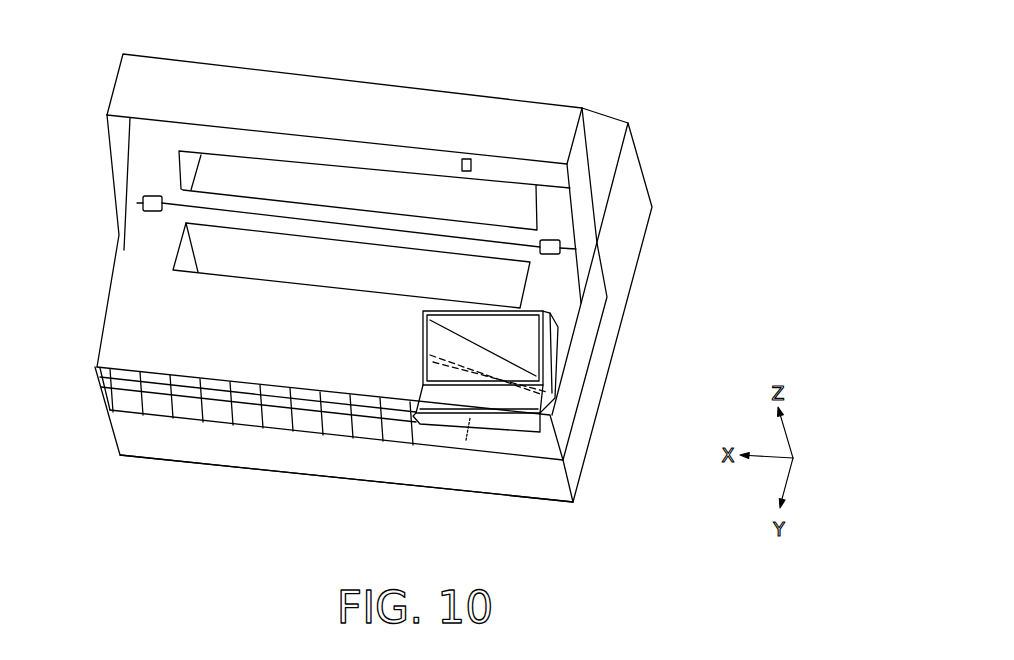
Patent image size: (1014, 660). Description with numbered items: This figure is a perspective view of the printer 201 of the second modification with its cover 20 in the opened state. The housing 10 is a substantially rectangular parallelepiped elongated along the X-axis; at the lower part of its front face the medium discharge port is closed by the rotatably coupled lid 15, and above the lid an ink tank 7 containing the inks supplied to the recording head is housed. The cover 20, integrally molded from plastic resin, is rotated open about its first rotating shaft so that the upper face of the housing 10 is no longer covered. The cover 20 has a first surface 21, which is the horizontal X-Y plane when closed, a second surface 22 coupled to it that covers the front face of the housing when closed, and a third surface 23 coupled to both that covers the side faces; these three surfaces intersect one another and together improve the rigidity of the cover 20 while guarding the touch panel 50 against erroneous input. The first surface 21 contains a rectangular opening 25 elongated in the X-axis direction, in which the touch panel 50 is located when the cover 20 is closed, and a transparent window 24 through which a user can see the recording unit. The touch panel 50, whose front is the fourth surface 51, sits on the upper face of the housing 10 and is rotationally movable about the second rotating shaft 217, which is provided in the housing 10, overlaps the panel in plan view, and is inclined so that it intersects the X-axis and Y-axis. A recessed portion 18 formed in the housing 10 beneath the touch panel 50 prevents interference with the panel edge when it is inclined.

The printer 201 is at (646, 75).
The cover 20 is at (306, 62).
The second surface 22 is at (521, 112).
The first surface 21 is at (148, 143).
The window 24 is at (187, 170).
The opening 25 is at (465, 164).
The third surface 23 is at (583, 235).
The housing 10 is at (609, 410).
The ink tank 7 is at (222, 410).
The lid 15 is at (295, 463).
The touch panel 50 is at (411, 322).
The fourth surface 51 is at (497, 333).
The recessed portion 18 is at (470, 440).
The second rotating shaft 217 is at (517, 392).